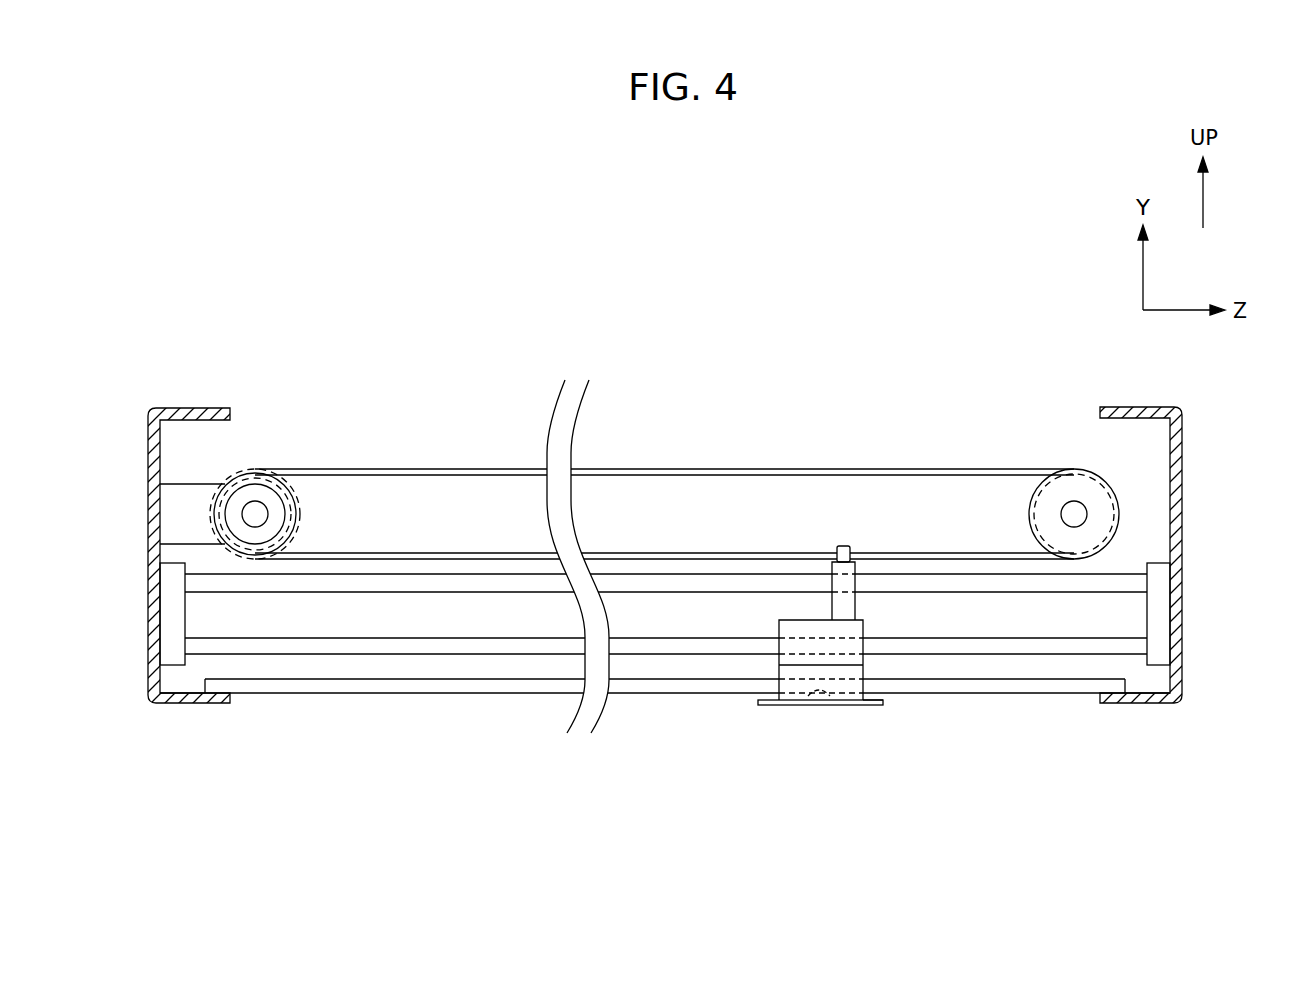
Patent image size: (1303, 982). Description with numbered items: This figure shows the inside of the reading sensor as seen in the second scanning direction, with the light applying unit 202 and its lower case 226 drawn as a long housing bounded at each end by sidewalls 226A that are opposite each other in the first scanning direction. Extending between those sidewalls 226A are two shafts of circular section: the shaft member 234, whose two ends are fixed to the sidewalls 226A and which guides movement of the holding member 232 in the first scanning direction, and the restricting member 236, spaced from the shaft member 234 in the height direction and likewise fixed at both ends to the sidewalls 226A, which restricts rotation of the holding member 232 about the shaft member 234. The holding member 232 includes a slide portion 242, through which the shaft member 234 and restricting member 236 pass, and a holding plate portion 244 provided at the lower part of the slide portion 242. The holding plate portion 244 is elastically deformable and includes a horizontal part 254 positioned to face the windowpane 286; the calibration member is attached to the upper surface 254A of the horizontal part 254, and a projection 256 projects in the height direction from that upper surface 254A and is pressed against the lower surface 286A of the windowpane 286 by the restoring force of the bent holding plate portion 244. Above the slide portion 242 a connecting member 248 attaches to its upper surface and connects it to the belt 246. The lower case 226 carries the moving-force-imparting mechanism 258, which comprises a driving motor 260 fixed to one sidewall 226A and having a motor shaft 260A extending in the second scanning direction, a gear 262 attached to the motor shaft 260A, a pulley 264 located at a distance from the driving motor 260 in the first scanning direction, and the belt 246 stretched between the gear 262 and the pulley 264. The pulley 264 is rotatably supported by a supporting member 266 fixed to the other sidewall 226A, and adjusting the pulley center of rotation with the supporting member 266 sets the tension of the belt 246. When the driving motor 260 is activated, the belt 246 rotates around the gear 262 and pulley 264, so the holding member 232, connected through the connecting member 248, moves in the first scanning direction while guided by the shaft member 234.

The light applying unit 202 is at (968, 330).
The lower case 226 is at (1190, 424).
The sidewalls 226A is at (148, 488).
The holding member 232 is at (878, 627).
The shaft member 234 is at (1132, 655).
The restricting member 236 is at (1123, 574).
The slide portion 242 is at (831, 608).
The holding plate portion 244 is at (770, 706).
The belt 246 is at (903, 468).
The connecting member 248 is at (840, 545).
The horizontal part 254 is at (887, 705).
The upper surface 254A is at (875, 700).
The projection 256 is at (848, 708).
The moving-force-imparting mechanism 258 is at (836, 450).
The driving motor 260 is at (1074, 500).
The motor shaft 260A is at (1074, 514).
The gear 262 is at (1027, 508).
The pulley 264 is at (303, 507).
The supporting member 266 is at (207, 484).
The windowpane 286 is at (1030, 695).
The lower surface 286A is at (1003, 693).